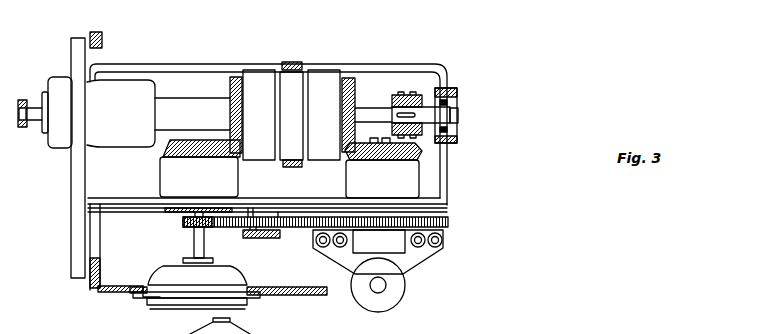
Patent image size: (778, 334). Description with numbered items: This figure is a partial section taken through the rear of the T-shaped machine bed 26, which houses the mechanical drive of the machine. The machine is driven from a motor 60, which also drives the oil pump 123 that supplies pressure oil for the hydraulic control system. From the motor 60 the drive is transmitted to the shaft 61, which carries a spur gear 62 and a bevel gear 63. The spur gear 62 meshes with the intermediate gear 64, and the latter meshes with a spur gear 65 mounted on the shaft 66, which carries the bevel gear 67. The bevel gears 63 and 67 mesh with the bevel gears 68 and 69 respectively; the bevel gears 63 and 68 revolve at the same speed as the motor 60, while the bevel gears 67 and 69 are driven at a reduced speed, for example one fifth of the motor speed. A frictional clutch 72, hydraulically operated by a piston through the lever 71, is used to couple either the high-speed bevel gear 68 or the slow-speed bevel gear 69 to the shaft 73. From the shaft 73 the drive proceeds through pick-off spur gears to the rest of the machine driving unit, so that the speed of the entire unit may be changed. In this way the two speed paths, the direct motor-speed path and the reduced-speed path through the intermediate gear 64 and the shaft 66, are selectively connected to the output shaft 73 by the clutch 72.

The machine bed 26 is at (100, 288).
The motor 60 is at (195, 278).
The shaft 61 is at (193, 247).
The spur gear 62 is at (183, 221).
The bevel gear 63 is at (163, 152).
The intermediate gear 64 is at (239, 231).
The spur gear 65 is at (448, 222).
The shaft 66 is at (376, 142).
The bevel gear 67 is at (395, 161).
The bevel gear 68 is at (229, 90).
The bevel gear 69 is at (349, 80).
The lever 71 is at (287, 63).
The frictional clutch 72 is at (293, 113).
The shaft 73 is at (170, 107).
The oil pump 123 is at (387, 273).